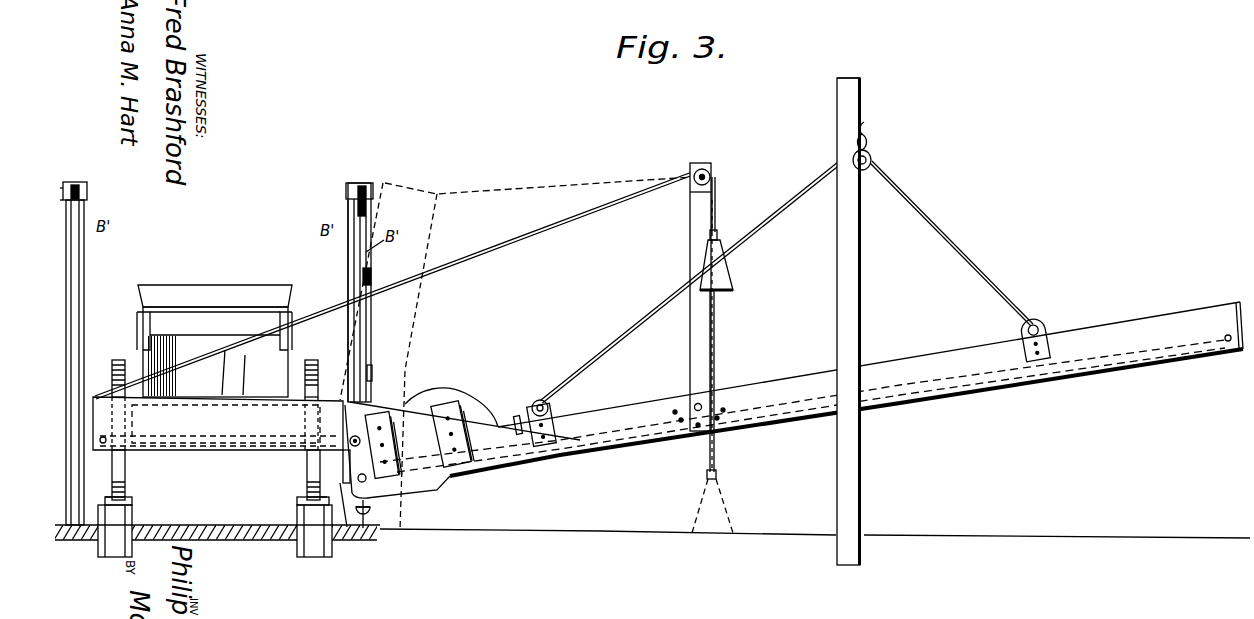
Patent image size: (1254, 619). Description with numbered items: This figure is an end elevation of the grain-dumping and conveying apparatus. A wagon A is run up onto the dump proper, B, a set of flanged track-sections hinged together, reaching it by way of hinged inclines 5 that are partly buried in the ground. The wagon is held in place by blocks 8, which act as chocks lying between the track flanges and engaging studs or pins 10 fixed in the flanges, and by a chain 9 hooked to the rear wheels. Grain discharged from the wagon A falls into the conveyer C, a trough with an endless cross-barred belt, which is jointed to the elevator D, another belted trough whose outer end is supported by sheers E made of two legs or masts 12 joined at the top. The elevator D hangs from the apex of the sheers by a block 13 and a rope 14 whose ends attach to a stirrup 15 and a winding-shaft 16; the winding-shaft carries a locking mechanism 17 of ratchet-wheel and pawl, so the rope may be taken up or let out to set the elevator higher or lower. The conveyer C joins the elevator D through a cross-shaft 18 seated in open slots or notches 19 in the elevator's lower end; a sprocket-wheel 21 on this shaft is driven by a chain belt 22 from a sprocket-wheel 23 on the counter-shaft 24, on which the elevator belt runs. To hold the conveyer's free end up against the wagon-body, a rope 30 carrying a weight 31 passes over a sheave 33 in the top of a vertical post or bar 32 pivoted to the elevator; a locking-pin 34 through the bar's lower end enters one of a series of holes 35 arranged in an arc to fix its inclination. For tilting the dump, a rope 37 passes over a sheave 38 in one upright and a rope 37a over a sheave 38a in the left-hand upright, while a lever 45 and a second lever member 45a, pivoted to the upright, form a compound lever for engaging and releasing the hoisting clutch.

The hinged inclines 5 is at (215, 531).
The blocks 8 is at (121, 498).
The chain 9 is at (110, 496).
The studs or pins 10 is at (130, 502).
The legs or masts 12 is at (863, 321).
The block 13 is at (873, 158).
The rope 14 is at (634, 333).
The stirrup 15 is at (1045, 322).
The winding-shaft 16 is at (556, 414).
The locking mechanism 17 is at (546, 394).
The cross-shaft 18 is at (355, 436).
The open slots or notches 19 is at (344, 462).
The sprocket-wheel 21 is at (388, 444).
The chain belt 22 is at (438, 433).
The sprocket-wheel 23 is at (372, 508).
The counter-shaft 24 is at (366, 481).
The rope 30 is at (534, 240).
The weight 31 is at (735, 270).
The vertical post or bar 32 is at (690, 266).
The sheave 33 is at (711, 172).
The locking-pin 34 is at (696, 440).
The series of holes 35 is at (727, 412).
The rope 37 is at (352, 244).
The rope 37a is at (76, 259).
The sheave 38 is at (516, 345).
The sheave 38a is at (88, 190).
The lever 45 is at (373, 376).
The second lever member 45a is at (373, 267).
The wagon A is at (214, 330).
The dump proper B is at (217, 521).
The conveyer C is at (218, 423).
The elevator D is at (950, 353).
The sheers E is at (865, 96).